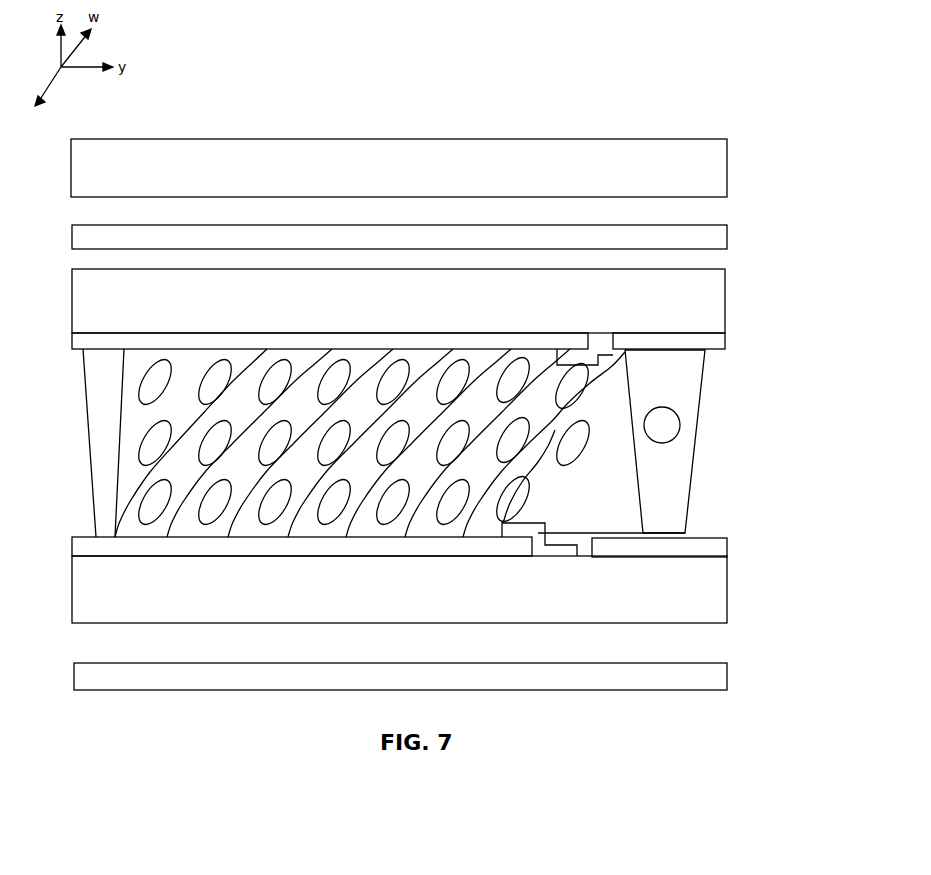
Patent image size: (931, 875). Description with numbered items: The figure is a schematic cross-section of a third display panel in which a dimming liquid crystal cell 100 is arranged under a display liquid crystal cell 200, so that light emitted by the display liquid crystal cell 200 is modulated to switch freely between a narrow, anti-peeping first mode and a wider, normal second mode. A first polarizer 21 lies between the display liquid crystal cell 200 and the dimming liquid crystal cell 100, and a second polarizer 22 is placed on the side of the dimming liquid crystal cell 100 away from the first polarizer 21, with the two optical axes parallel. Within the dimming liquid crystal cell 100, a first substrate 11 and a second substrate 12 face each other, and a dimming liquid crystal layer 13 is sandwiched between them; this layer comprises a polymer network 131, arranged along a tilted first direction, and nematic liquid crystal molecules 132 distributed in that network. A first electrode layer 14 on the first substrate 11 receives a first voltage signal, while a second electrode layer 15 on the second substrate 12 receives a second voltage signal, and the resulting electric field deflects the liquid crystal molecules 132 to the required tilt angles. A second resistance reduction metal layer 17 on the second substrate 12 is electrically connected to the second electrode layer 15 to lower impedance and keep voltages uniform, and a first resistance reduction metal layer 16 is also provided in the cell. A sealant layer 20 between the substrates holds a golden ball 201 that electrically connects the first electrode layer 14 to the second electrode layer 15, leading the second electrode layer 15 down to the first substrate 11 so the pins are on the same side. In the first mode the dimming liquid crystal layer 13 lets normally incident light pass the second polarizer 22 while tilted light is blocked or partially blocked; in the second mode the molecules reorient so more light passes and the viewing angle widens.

The display liquid crystal cell 200 is at (678, 165).
The first polarizer 21 is at (676, 240).
The second substrate 12 is at (678, 300).
The second electrode layer 15 is at (84, 342).
The second resistance reduction metal layer 17 is at (590, 356).
The sealant layer 20 is at (680, 375).
The golden ball 201 is at (662, 425).
The polymer network 131 is at (572, 447).
The liquid crystal molecules 132 is at (523, 465).
The dimming liquid crystal layer 13 is at (454, 443).
The first resistance reduction metal layer 16 is at (685, 533).
The first electrode layer 14 is at (92, 547).
The first substrate 11 is at (427, 589).
The second polarizer 22 is at (676, 678).
The dimming liquid crystal cell 100 is at (436, 446).